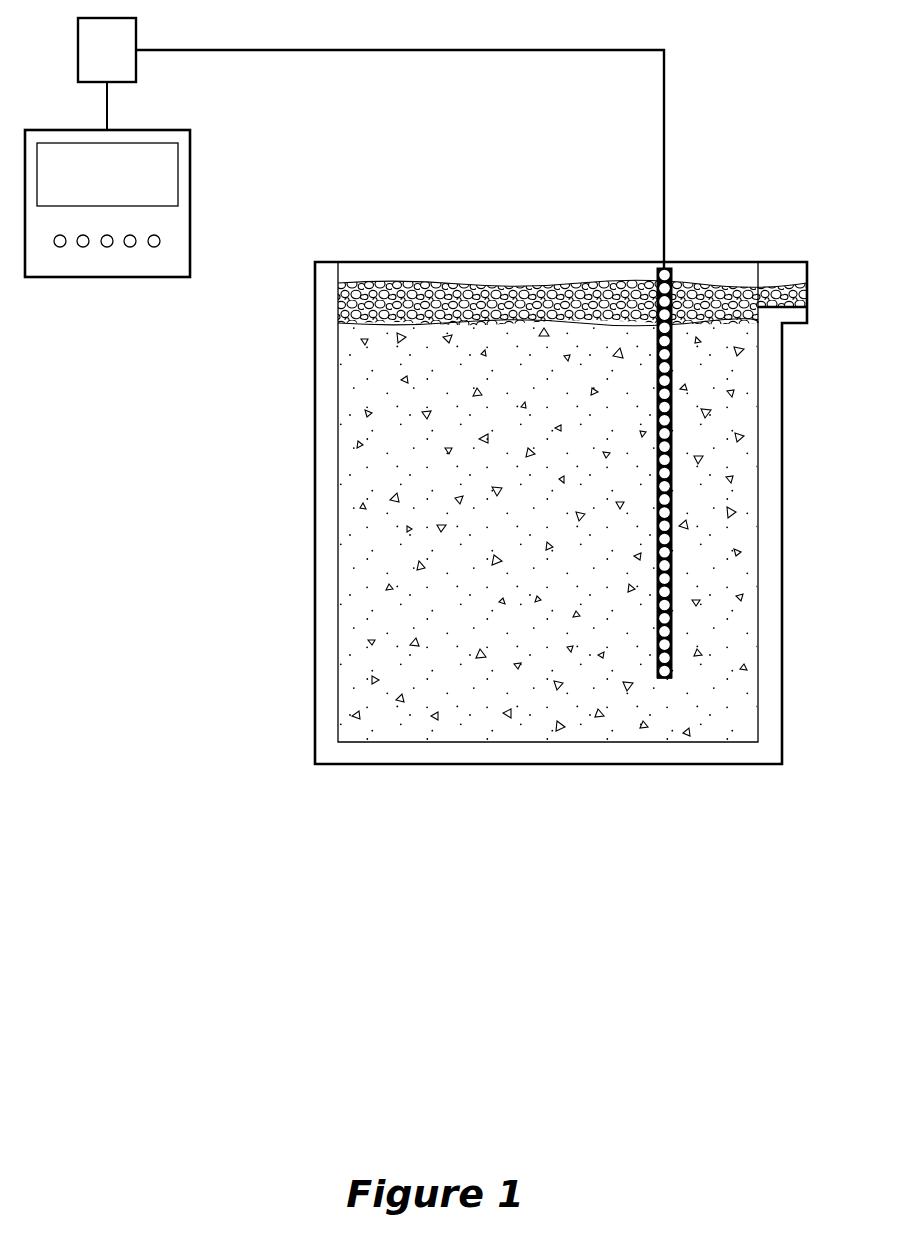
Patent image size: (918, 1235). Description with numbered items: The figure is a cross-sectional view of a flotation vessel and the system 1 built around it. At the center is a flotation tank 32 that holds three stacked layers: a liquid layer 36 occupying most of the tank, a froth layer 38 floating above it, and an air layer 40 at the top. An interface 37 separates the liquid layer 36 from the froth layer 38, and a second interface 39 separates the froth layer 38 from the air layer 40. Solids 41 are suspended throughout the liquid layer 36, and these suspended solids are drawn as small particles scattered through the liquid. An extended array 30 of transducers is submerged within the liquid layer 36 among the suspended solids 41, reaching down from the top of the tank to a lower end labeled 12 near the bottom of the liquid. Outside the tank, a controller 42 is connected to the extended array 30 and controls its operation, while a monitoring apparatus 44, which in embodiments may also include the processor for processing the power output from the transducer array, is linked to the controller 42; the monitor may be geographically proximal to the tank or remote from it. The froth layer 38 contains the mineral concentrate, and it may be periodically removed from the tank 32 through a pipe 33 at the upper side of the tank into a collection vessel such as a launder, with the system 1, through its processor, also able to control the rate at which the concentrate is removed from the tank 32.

The system 1 is at (770, 144).
The electrode tip 12 is at (668, 670).
The extended array 30 is at (672, 470).
The flotation tank 32 is at (770, 396).
The pipe 33 is at (808, 300).
The liquid layer 36 is at (363, 433).
The interface 37 is at (400, 325).
The froth layer 38 is at (360, 300).
The interface 39 is at (398, 283).
The air layer 40 is at (460, 273).
The solids 41 is at (392, 498).
The controller 42 is at (118, 57).
The monitoring apparatus 44 is at (118, 180).